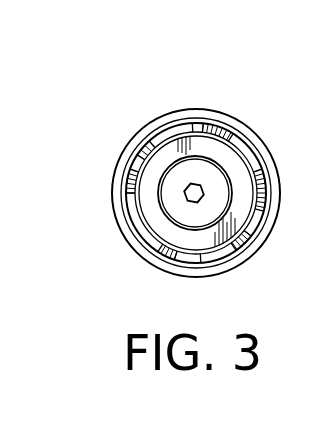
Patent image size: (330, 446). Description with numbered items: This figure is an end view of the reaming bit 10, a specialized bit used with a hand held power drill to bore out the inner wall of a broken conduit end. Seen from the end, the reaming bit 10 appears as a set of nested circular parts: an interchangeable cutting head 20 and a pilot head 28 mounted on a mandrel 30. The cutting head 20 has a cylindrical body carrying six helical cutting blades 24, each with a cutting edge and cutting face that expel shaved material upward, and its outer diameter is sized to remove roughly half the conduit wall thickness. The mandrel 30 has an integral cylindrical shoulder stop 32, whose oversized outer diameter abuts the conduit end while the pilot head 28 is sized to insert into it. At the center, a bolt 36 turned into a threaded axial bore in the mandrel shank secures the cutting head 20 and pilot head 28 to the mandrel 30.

The reaming bit 10 is at (138, 97).
The cutting head 20 is at (230, 132).
The helical cutting blades 24 is at (127, 198).
The pilot head 28 is at (235, 218).
The mandrel 30 is at (111, 179).
The shoulder stop 32 is at (132, 143).
The bolt 36 is at (183, 215).